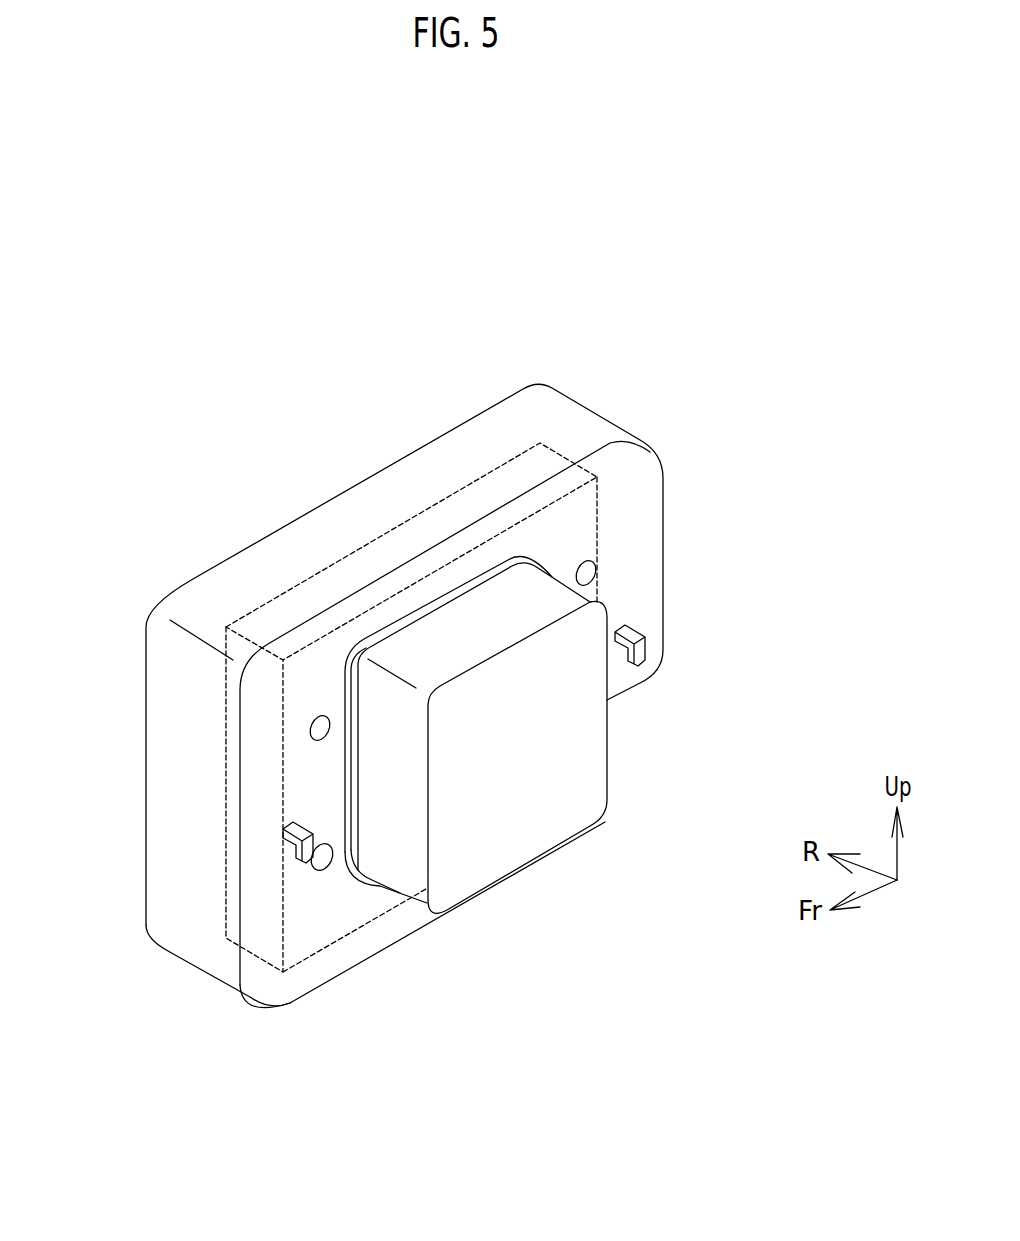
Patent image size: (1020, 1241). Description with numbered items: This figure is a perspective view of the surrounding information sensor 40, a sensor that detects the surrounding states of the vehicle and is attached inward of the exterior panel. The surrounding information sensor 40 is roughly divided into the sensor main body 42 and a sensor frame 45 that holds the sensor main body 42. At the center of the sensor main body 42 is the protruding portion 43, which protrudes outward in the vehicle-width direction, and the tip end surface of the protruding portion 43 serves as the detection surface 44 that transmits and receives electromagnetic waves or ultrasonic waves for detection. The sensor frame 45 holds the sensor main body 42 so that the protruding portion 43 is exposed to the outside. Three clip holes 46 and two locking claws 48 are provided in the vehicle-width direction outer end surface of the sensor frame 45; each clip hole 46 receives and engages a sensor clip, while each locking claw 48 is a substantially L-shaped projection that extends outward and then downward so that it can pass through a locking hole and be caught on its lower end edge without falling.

The surrounding information sensor 40 is at (303, 351).
The sensor main body 42 is at (458, 512).
The protruding portion 43 is at (532, 598).
The detection surface 44 is at (553, 797).
The sensor frame 45 is at (172, 753).
The clip hole 46 is at (333, 722).
The locking claw 48 is at (636, 651).